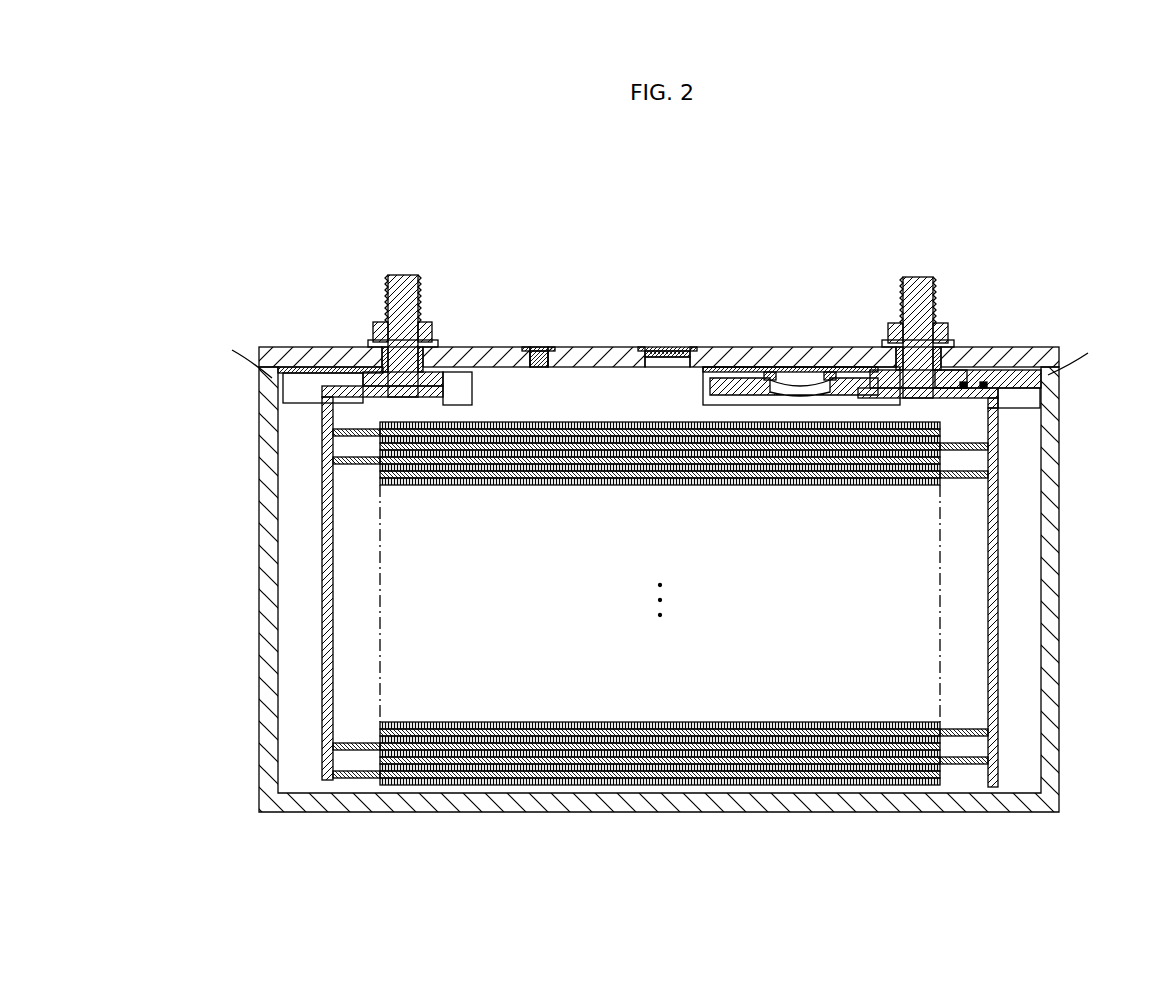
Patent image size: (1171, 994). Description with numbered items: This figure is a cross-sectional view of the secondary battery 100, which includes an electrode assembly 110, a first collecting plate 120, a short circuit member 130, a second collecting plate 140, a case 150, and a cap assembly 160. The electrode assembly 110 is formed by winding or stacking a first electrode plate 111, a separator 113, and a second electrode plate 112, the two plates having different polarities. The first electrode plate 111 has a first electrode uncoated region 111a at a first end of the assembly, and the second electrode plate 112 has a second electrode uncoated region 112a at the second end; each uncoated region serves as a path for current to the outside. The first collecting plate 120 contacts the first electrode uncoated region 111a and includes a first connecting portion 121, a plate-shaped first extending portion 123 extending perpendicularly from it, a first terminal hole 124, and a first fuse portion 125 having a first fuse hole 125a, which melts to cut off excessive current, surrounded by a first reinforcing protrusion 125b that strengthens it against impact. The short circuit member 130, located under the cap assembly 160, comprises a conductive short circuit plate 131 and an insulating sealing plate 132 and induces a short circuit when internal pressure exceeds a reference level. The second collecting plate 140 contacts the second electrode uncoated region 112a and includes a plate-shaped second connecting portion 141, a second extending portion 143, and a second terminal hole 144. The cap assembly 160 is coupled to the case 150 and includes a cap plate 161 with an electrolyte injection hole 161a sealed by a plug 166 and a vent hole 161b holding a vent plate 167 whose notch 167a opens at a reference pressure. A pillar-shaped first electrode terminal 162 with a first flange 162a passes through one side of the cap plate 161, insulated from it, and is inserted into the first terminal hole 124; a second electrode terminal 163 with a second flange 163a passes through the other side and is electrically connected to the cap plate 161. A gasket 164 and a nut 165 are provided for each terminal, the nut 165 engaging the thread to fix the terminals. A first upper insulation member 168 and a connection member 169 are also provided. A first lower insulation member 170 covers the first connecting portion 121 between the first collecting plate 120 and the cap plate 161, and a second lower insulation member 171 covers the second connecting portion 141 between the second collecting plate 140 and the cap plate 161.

The secondary battery 100 is at (1017, 200).
The electrode assembly 110 is at (661, 651).
The first electrode plate 111 is at (662, 655).
The first electrode uncoated region 111a is at (965, 768).
The second electrode plate 112 is at (660, 662).
The second electrode uncoated region 112a is at (357, 778).
The separator 113 is at (680, 772).
The first collecting plate 120 is at (987, 506).
The first connecting portion 121 is at (975, 370).
The first extending portion 123 is at (998, 613).
The first terminal hole 124 is at (1000, 415).
The first fuse portion 125 is at (1029, 323).
The first fuse hole 125a is at (968, 383).
The first reinforcing protrusion 125b is at (986, 383).
The short circuit member 130 is at (801, 329).
The short circuit plate 131 is at (815, 378).
The sealing plate 132 is at (778, 378).
The second collecting plate 140 is at (361, 502).
The second connecting portion 141 is at (378, 362).
The second extending portion 143 is at (325, 607).
The second terminal hole 144 is at (395, 398).
The case 150 is at (1062, 480).
The cap assembly 160 is at (697, 250).
The cap plate 161 is at (659, 354).
The electrolyte injection hole 161a is at (542, 369).
The vent hole 161b is at (665, 369).
The first electrode terminal 162 is at (896, 312).
The first flange 162a is at (870, 375).
The second electrode terminal 163 is at (455, 316).
The second flange 163a is at (447, 380).
The gasket 164 is at (375, 345).
The nut 165 is at (385, 325).
The plug 166 is at (530, 347).
The vent plate 167 is at (660, 321).
The notch 167a is at (655, 347).
The first upper insulation member 168 is at (883, 345).
The connection member 169 is at (440, 350).
The first lower insulation member 170 is at (1040, 395).
The second lower insulation member 171 is at (283, 382).